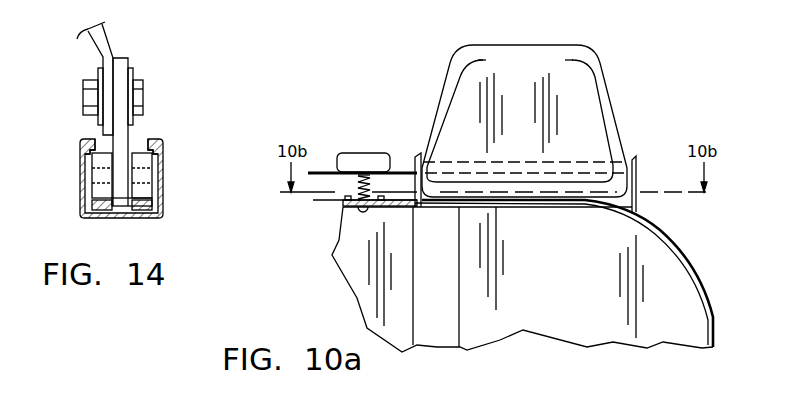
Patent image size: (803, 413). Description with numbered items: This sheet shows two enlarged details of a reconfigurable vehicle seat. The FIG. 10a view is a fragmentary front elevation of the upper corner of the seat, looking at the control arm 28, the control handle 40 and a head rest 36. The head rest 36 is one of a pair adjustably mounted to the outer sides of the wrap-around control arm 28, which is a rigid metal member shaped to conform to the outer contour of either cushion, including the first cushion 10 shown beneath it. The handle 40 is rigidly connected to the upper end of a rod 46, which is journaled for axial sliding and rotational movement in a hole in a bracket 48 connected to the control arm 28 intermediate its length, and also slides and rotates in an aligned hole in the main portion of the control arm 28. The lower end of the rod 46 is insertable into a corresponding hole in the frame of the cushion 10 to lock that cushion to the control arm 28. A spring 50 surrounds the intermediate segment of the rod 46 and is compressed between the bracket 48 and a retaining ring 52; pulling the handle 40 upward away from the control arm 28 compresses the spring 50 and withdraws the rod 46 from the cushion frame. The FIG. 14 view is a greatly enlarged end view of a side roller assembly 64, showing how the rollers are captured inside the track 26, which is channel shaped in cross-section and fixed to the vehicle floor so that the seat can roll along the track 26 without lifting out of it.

In FIG. 10A, the first cushion 10 is at (575, 294).
In FIG. 14, the track 26 is at (80, 182).
In FIG. 10A, the control arm 28 is at (697, 259).
In FIG. 10A, the head rest 36 is at (533, 47).
In FIG. 10A, the handle 40 is at (364, 153).
In FIG. 10A, the rod 46 is at (364, 210).
In FIG. 10A, the bracket 48 is at (323, 171).
In FIG. 10A, the spring 50 is at (355, 184).
In FIG. 10A, the retaining ring 52 is at (372, 192).
In FIG. 14, the roller assembly 64 is at (147, 125).